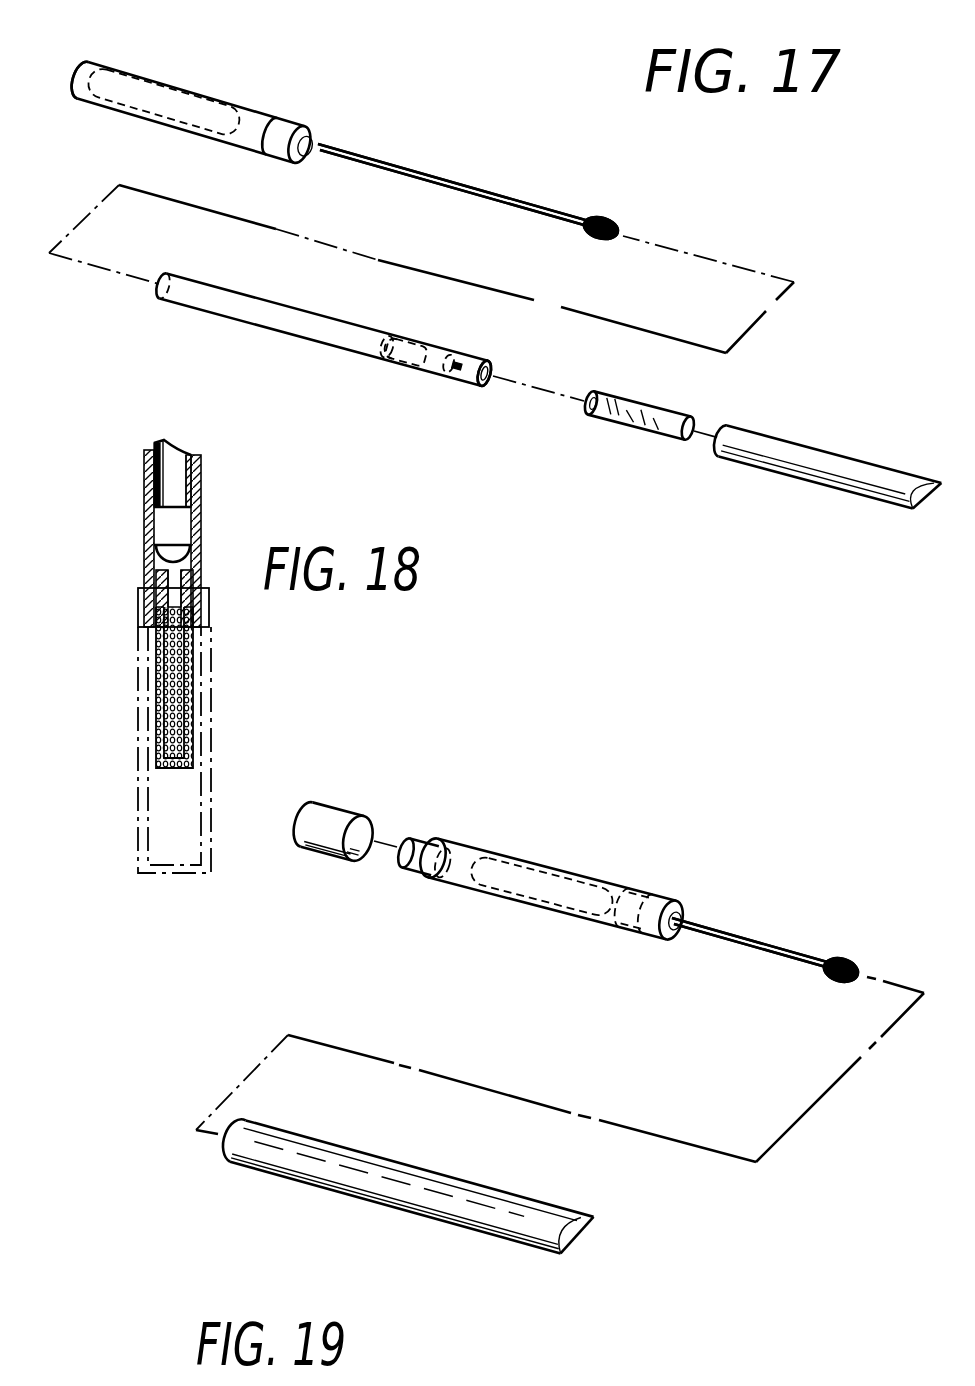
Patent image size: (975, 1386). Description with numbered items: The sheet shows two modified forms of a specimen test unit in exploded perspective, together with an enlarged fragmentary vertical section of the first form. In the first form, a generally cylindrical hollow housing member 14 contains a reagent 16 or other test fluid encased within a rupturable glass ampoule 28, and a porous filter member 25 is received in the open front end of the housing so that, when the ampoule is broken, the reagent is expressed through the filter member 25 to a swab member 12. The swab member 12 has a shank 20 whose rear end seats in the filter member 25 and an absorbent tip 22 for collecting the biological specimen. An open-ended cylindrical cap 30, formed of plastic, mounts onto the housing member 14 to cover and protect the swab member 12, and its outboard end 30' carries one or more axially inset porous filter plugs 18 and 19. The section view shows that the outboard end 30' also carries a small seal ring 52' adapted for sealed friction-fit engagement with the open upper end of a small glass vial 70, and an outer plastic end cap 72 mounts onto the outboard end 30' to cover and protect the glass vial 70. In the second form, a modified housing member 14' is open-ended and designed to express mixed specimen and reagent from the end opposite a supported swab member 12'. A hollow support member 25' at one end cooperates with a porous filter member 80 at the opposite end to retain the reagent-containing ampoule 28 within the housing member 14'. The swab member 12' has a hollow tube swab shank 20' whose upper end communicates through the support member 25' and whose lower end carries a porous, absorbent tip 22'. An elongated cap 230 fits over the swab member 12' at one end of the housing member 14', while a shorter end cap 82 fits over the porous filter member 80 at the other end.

In FIG. 17, the swab member 12 is at (469, 165).
In FIG. 17, the housing member 14 is at (191, 93).
In FIG. 17, the reagent 16 is at (146, 88).
In FIG. 17, the porous filter member 18 is at (398, 340).
In FIG. 18, the porous filter member 18 is at (180, 482).
In FIG. 17, the porous filter member 19 is at (400, 373).
In FIG. 18, the porous filter member 19 is at (165, 562).
In FIG. 17, the swab shank 20 is at (458, 185).
In FIG. 17, the absorbent tip 22 is at (611, 205).
In FIG. 17, the porous filter member 25 is at (319, 123).
In FIG. 17, the ampoule 28 is at (183, 126).
In FIG. 19, the ampoule 28 is at (508, 862).
In FIG. 17, the cap 30 is at (324, 330).
In FIG. 18, the cap 30 is at (144, 538).
In FIG. 17, the outboard end 30' is at (490, 348).
In FIG. 17, the seal ring 52' is at (442, 385).
In FIG. 18, the seal ring 52' is at (148, 598).
In FIG. 17, the glass vial 70 is at (632, 404).
In FIG. 18, the glass vial 70 is at (190, 722).
In FIG. 17, the end cap 72 is at (818, 458).
In FIG. 18, the end cap 72 is at (208, 803).
In FIG. 19, the porous filter member 80 is at (412, 845).
In FIG. 19, the end cap 82 is at (332, 814).
In FIG. 19, the swab member 12' is at (766, 931).
In FIG. 19, the housing member 14' is at (551, 860).
In FIG. 19, the swab shank 20' is at (756, 951).
In FIG. 19, the absorbent tip 22' is at (858, 951).
In FIG. 19, the support member 25' is at (652, 887).
In FIG. 19, the cap 230 is at (508, 1205).